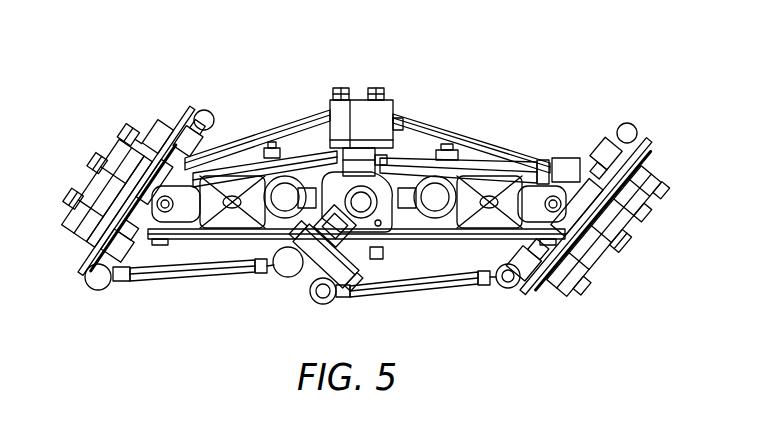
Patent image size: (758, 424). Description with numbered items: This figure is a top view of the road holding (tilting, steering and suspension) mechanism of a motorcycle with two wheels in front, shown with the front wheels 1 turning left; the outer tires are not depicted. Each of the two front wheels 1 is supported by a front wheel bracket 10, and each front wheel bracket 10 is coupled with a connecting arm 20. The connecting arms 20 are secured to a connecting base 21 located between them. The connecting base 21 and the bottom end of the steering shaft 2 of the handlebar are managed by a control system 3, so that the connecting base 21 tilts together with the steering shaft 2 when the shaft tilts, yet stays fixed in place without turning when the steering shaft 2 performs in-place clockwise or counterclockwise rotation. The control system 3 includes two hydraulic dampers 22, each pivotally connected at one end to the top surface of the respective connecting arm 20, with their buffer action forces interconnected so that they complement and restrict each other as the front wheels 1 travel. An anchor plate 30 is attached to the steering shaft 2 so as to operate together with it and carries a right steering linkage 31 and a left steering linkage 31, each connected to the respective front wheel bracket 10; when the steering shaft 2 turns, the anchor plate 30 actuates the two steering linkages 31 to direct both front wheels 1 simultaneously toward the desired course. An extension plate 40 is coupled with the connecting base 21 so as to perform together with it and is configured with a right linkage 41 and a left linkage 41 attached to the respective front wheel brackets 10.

The front wheel 1 is at (97, 223).
The front wheel bracket 10 is at (125, 147).
The steering shaft 2 is at (362, 205).
The connecting arm 20 is at (233, 140).
The connecting base 21 is at (356, 100).
The hydraulic damper 22 is at (287, 195).
The control system 3 is at (435, 83).
The anchor plate 30 is at (323, 257).
The steering linkage 31 is at (180, 275).
The extension plate 40 is at (357, 162).
The linkage 41 is at (312, 160).